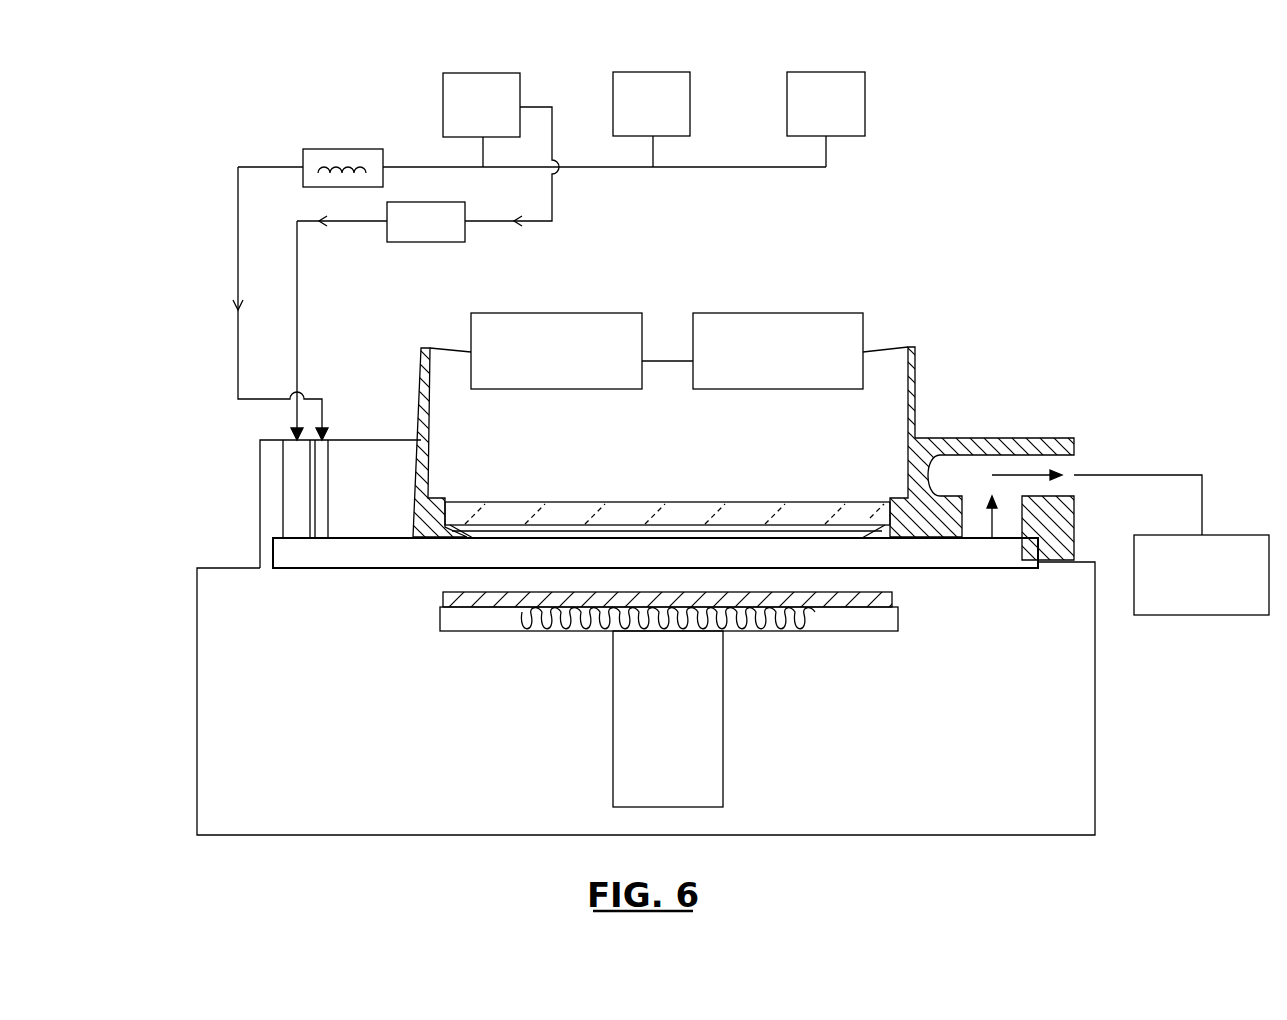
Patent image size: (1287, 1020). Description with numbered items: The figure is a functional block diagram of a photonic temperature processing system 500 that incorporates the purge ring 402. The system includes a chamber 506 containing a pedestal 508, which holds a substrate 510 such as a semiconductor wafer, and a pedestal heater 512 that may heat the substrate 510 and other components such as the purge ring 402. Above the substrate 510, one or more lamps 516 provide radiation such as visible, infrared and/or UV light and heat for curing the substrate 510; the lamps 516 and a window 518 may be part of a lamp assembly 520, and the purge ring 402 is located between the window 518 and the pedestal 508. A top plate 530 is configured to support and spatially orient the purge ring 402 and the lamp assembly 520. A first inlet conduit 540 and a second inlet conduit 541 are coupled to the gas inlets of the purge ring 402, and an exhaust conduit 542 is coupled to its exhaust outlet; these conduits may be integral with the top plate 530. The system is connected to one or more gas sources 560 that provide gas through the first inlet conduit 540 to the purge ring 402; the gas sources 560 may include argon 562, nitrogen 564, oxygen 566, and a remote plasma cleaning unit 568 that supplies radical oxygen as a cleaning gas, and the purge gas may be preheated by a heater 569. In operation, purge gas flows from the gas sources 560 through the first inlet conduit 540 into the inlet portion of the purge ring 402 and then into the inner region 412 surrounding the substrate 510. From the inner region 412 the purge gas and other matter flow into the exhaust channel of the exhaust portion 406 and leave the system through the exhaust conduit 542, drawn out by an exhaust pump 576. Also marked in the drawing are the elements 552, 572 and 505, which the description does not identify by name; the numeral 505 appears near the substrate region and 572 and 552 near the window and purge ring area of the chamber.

The photonic temperature processing system 500 is at (115, 98).
The gas sources 560 is at (1000, 125).
The argon 562 is at (865, 90).
The nitrogen 564 is at (613, 90).
The oxygen 566 is at (443, 92).
The remote plasma cleaning (RPC) unit 568 is at (465, 234).
The heater 569 is at (320, 149).
The lamps 516 is at (617, 320).
The top plate 530 is at (401, 437).
The lamp assembly 520 is at (892, 373).
The exhaust conduit 542 is at (1067, 462).
The window 518 is at (862, 500).
The first inlet conduit 540 is at (283, 487).
The second inlet conduit 541 is at (315, 515).
The window 552 is at (430, 500).
The inner region 412 is at (540, 537).
The dielectric layer 572 is at (630, 532).
The substrate surface 505 is at (780, 530).
The purge ring 402 is at (895, 572).
The exhaust portion 406 is at (935, 567).
The chamber 506 is at (197, 695).
The substrate 510 is at (443, 598).
The pedestal 508 is at (478, 622).
The pedestal heater 512 is at (795, 619).
The exhaust pump 576 is at (1250, 606).